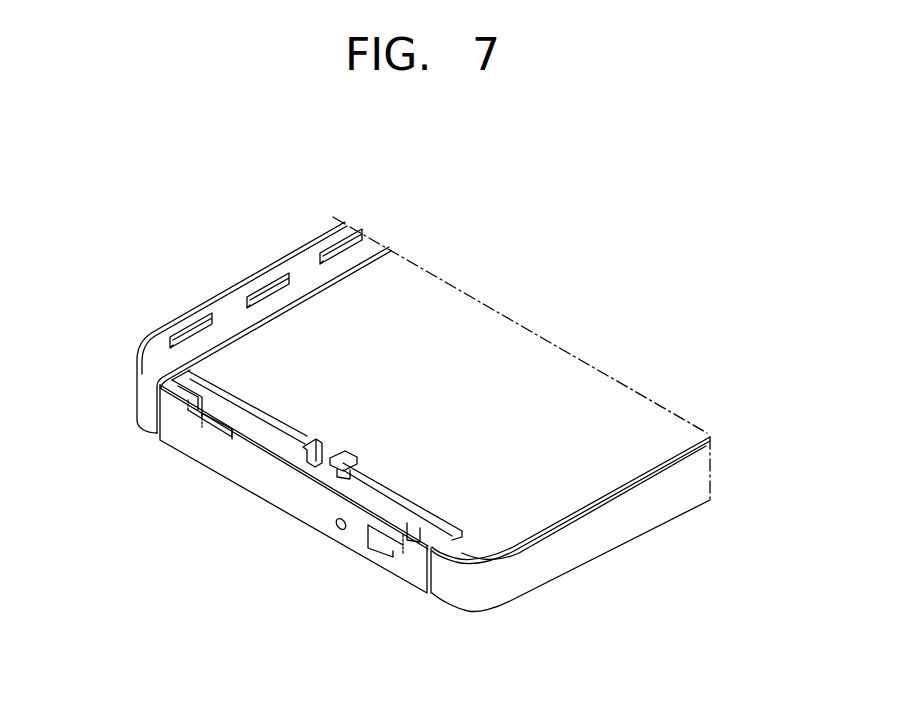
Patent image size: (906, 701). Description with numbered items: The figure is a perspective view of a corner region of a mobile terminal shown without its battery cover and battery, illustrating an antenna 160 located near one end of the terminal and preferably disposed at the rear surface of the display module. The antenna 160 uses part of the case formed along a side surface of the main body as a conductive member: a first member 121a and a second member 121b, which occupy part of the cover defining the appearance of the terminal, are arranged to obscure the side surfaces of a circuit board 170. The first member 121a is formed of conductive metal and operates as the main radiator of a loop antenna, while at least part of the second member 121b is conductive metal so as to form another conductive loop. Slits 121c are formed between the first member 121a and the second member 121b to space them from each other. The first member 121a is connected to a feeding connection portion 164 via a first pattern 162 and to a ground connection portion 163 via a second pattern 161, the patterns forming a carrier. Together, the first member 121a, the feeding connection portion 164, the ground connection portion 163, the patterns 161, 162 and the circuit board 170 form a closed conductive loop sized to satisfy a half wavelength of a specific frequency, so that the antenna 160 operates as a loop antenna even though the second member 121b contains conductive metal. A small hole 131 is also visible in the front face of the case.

The circuit board 170 is at (483, 306).
The slits 121c is at (152, 418).
The first member 121a is at (403, 573).
The second member 121b is at (450, 598).
The antenna 160 is at (303, 483).
The second pattern 161 is at (280, 430).
The first pattern 162 is at (360, 524).
The ground connection portion 163 is at (310, 457).
The feeding connection portion 164 is at (338, 473).
The hole 131 is at (339, 532).